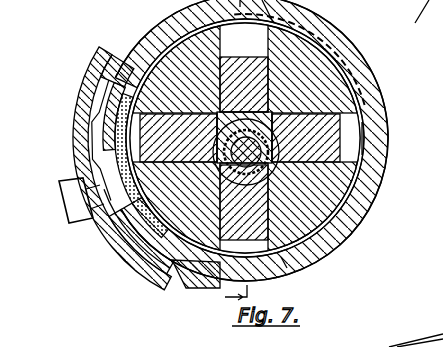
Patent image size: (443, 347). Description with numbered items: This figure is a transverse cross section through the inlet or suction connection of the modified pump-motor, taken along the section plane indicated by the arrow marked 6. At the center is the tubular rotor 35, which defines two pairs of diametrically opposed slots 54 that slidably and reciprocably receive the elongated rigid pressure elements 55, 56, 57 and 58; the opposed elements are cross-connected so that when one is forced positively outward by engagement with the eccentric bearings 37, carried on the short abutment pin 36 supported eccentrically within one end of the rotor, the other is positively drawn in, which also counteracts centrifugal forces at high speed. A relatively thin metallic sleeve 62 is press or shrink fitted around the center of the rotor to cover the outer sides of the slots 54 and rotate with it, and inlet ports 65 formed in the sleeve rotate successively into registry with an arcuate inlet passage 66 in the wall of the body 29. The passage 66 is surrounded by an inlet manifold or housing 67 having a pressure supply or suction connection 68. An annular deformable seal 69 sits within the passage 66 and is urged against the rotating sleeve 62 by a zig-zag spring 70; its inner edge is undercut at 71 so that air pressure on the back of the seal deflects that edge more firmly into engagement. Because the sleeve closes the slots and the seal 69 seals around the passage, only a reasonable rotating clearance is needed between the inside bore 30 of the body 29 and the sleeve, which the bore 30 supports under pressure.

The modified body 29 is at (147, 40).
The metallic sleeve 62 is at (330, 56).
The pressure element 55 is at (243, 63).
The slots 54 is at (348, 133).
The pressure element 56 is at (362, 150).
The inlet ports 65 is at (360, 100).
The central internal cylindrical surface 30 is at (357, 198).
The tubular rotor 35 is at (332, 214).
The bearings 37 is at (322, 262).
The abutment pin 36 is at (284, 264).
The pressure element 57 is at (214, 291).
The inlet manifold 67 is at (150, 277).
The pressure element 58 is at (140, 250).
The annular deformable seal 69 is at (101, 230).
The pressure supply or suction connection 68 is at (62, 209).
The zig-zag spring 70 is at (100, 128).
The arcuate inlet passage 66 is at (110, 123).
The undercut 71 is at (92, 88).
The section line 6 is at (228, 297).